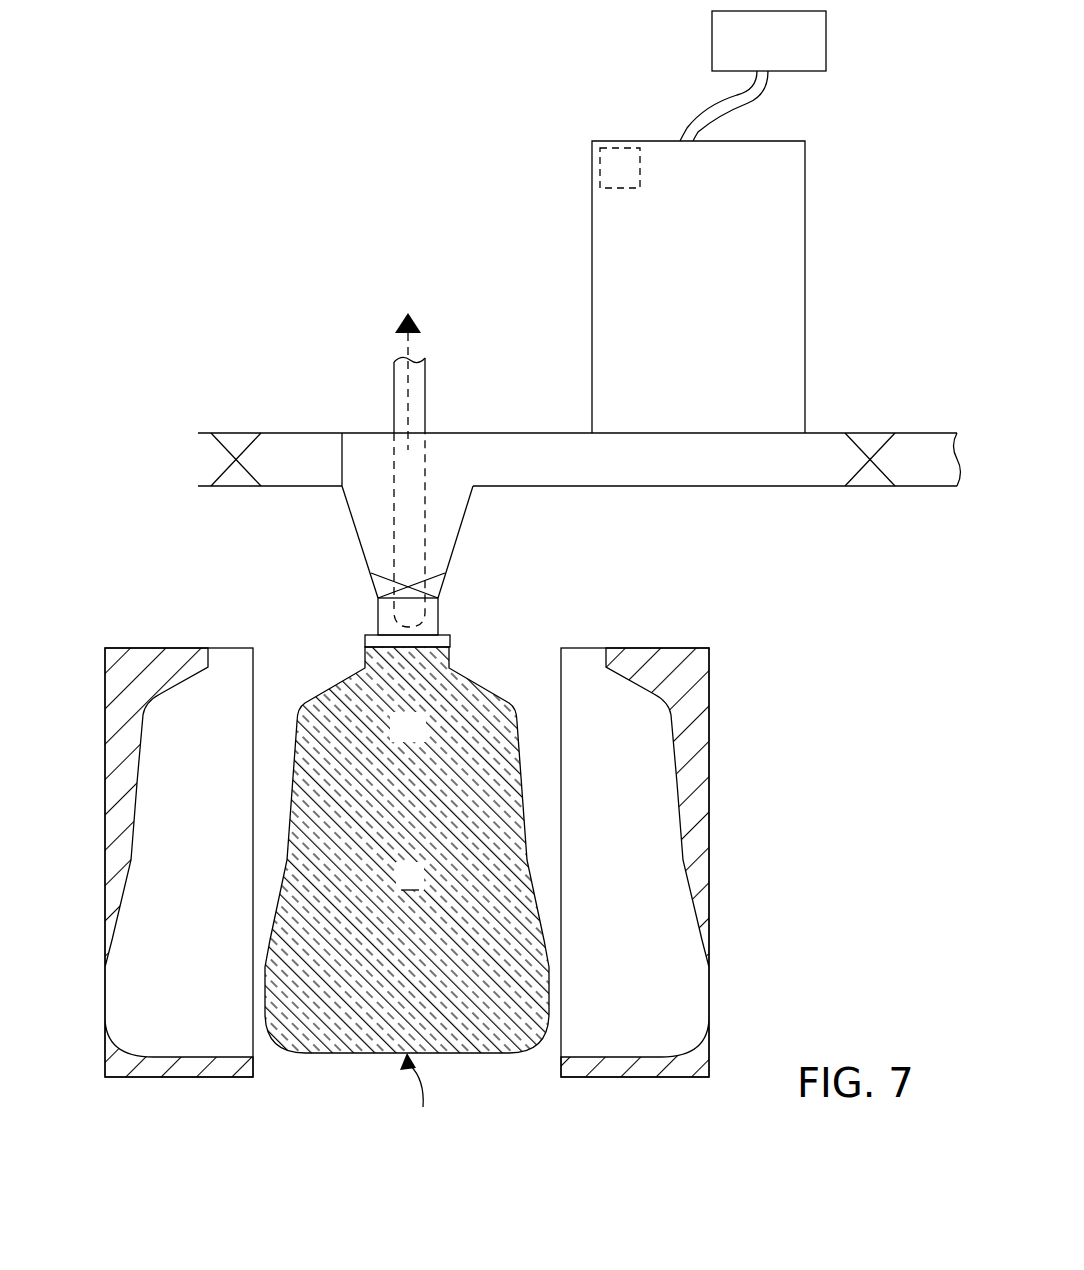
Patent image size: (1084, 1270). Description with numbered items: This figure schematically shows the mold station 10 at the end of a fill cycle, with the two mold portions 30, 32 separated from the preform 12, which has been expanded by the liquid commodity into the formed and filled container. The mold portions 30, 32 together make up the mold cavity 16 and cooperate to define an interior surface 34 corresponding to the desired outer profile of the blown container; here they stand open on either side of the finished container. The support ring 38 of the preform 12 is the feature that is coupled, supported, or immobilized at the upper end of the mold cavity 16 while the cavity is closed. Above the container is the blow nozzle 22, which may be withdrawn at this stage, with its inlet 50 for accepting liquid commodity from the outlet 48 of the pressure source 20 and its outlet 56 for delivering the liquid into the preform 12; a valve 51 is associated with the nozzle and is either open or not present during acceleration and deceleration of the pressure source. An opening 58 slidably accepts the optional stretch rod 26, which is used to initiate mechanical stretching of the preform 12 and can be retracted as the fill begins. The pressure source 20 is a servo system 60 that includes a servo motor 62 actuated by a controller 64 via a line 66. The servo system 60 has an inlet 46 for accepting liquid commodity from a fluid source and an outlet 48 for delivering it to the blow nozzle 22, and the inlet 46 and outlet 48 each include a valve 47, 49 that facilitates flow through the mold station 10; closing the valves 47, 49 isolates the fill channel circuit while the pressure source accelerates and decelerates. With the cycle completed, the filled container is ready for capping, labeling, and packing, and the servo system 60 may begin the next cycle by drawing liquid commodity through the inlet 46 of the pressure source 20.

The mold station 10 is at (270, 60).
The preform 12 is at (394, 743).
The mold cavity 16 is at (652, 750).
The pressure source 20 is at (805, 313).
The blow nozzle 22 is at (358, 540).
The stretch rod 26 is at (420, 613).
The mold portion 30 is at (105, 792).
The mold portion 32 is at (709, 790).
The interior surface 34 is at (125, 873).
The support ring 38 is at (452, 641).
The inlet 46 is at (930, 460).
The valve 47 is at (868, 460).
The outlet 48 is at (560, 455).
The valve 49 is at (237, 458).
The inlet 50 is at (458, 540).
The valve 51 is at (440, 585).
The outlet 56 is at (384, 603).
The opening 58 is at (394, 433).
The servo system 60 is at (818, 191).
The servo motor 62 is at (620, 148).
The controller 64 is at (754, 54).
The line 66 is at (750, 100).